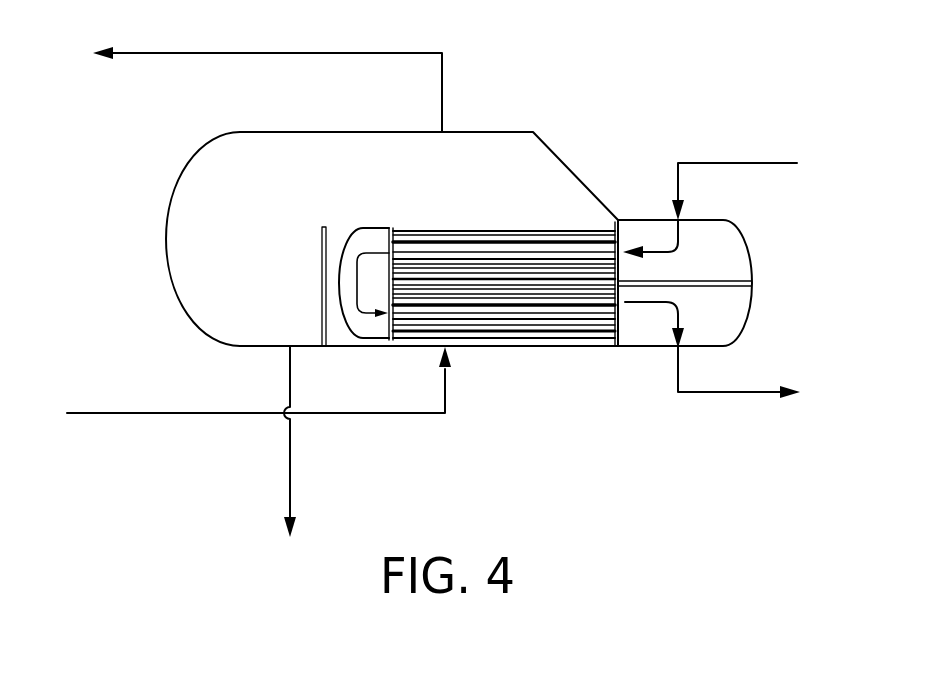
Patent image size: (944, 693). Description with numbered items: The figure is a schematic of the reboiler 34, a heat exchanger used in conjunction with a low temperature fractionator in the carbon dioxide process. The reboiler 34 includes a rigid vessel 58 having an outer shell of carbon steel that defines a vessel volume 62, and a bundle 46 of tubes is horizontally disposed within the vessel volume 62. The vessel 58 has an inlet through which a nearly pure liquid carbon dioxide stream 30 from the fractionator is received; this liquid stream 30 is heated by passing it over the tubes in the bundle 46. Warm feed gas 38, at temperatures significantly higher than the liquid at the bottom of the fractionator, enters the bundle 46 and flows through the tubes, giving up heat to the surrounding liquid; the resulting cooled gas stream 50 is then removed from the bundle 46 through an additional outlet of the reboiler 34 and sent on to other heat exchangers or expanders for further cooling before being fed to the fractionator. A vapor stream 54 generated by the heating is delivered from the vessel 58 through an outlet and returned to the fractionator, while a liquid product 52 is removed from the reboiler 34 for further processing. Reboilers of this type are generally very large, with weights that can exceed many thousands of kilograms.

The liquid stream 30 is at (132, 412).
The reboiler 34 is at (453, 280).
The feed gas 38 is at (780, 163).
The bundle 46 is at (472, 206).
The cooled gas stream 50 is at (728, 395).
The liquid product 52 is at (290, 459).
The vapor stream 54 is at (424, 53).
The vessel 58 is at (168, 276).
The vessel volume 62 is at (232, 183).